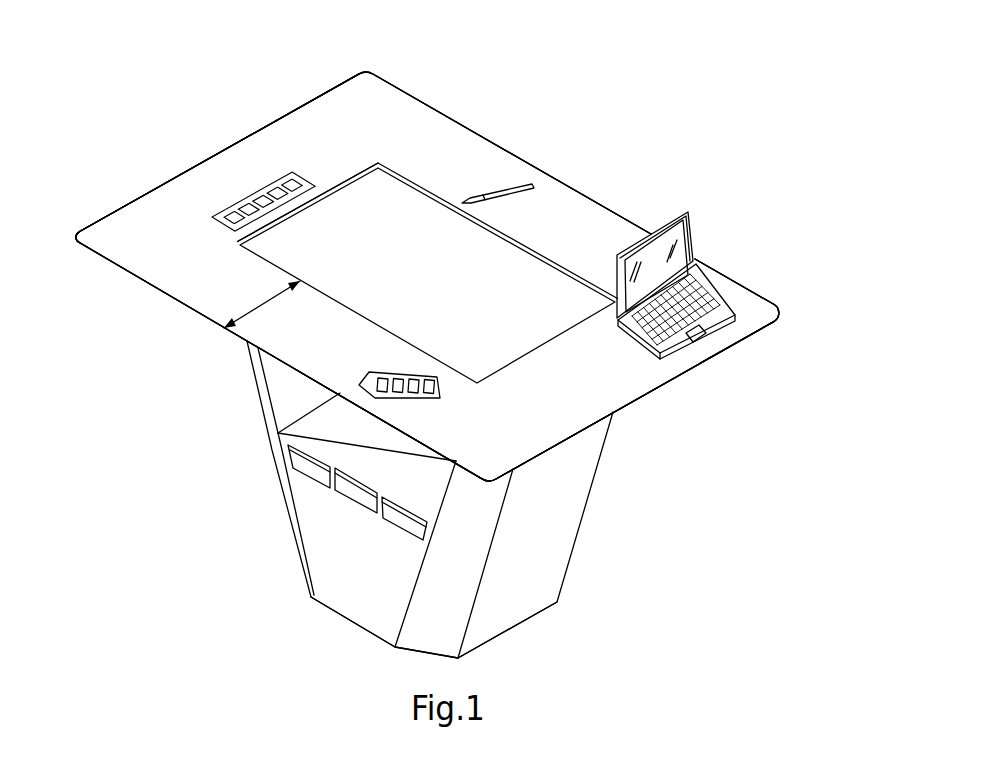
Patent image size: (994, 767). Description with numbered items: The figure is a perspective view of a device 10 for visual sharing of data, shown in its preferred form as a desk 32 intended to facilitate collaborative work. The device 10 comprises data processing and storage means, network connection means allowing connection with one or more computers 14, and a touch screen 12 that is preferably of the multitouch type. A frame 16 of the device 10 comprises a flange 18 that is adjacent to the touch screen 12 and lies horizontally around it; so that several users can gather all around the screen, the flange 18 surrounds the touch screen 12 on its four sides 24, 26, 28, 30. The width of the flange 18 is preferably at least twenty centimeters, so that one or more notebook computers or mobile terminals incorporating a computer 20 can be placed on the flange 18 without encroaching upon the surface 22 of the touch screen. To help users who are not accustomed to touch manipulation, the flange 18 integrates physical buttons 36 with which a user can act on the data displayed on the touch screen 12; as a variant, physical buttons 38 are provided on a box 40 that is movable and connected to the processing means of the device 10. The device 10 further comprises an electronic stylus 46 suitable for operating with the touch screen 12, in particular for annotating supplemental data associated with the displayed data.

The device for visual sharing of data 10 is at (182, 477).
The touch screen 12 is at (510, 263).
The computer 14 is at (708, 238).
The frame 16 is at (552, 157).
The flange 18 is at (627, 388).
The computer 20 is at (732, 312).
The surface of the touch screen 22 is at (403, 207).
The side of the touch screen 24 is at (645, 233).
The side of the touch screen 26 is at (358, 176).
The side of the touch screen 28 is at (262, 258).
The side of the touch screen 30 is at (527, 357).
The desk 32 is at (592, 548).
The physical buttons 36 is at (235, 196).
The physical buttons 38 is at (386, 364).
The box 40 is at (412, 400).
The electronic stylus 46 is at (493, 190).